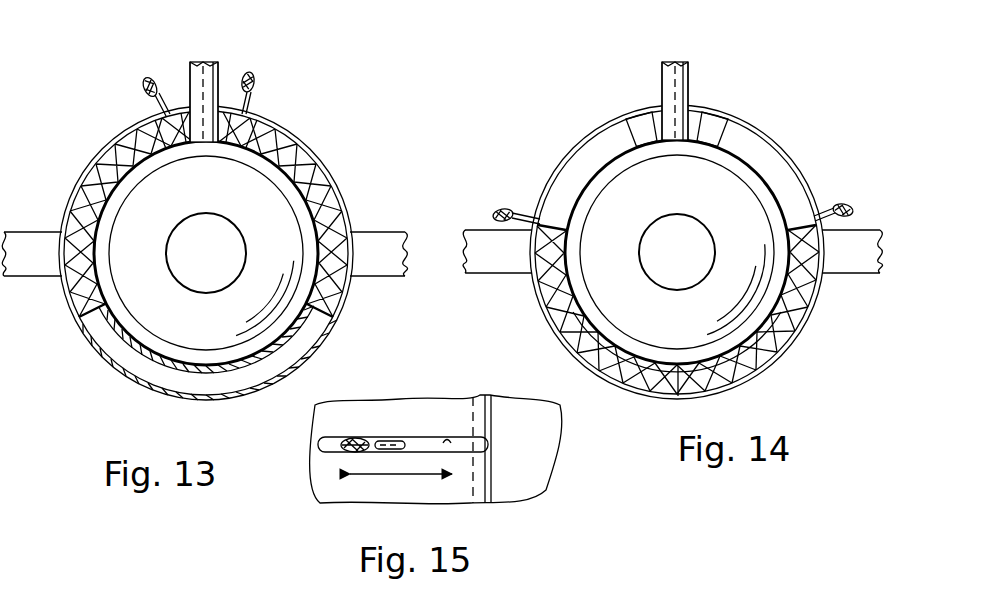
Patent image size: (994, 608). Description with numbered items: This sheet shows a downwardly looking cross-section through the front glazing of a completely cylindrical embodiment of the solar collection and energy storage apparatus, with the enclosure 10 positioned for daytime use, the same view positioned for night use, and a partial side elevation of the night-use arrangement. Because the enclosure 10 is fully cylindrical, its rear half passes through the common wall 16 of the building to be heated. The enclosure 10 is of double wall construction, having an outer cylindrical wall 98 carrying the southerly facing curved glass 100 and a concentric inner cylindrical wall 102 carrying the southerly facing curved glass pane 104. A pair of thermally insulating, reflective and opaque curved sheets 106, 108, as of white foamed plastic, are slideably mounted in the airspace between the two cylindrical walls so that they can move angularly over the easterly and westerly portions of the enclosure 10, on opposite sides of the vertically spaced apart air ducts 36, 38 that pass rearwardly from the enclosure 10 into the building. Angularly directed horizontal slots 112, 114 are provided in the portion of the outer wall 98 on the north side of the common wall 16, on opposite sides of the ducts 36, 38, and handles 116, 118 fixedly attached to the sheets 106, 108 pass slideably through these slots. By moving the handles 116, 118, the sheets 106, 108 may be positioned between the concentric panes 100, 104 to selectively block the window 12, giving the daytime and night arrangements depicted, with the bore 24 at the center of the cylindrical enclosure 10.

In FIG. 13, the enclosure 10 is at (318, 115).
In FIG. 14, the enclosure 10 is at (777, 97).
In FIG. 13, the window 12 is at (83, 352).
In FIG. 14, the window 12 is at (797, 351).
In FIG. 13, the common wall 16 is at (391, 266).
In FIG. 14, the common wall 16 is at (512, 253).
In FIG. 15, the common wall 16 is at (527, 449).
In FIG. 13, the bore 24 is at (108, 217).
In FIG. 14, the bore 24 is at (615, 175).
In FIG. 13, the air duct 36 is at (244, 71).
In FIG. 14, the air duct 36 is at (722, 88).
In FIG. 13, the air duct 38 is at (208, 82).
In FIG. 14, the air duct 38 is at (680, 97).
In FIG. 13, the outer cylindrical wall 98 is at (325, 182).
In FIG. 14, the outer cylindrical wall 98 is at (798, 165).
In FIG. 15, the outer cylindrical wall 98 is at (425, 490).
In FIG. 13, the southerly facing curved glass 100 is at (135, 380).
In FIG. 14, the southerly facing curved glass 100 is at (758, 375).
In FIG. 13, the inner cylindrical wall 102 is at (325, 205).
In FIG. 14, the inner cylindrical wall 102 is at (723, 142).
In FIG. 13, the curved glass pane 104 is at (186, 372).
In FIG. 14, the curved glass pane 104 is at (642, 378).
In FIG. 13, the curved sheet 106 is at (303, 160).
In FIG. 14, the curved sheet 106 is at (815, 315).
In FIG. 15, the curved sheet 106 is at (420, 445).
In FIG. 13, the curved sheet 108 is at (83, 170).
In FIG. 14, the curved sheet 108 is at (578, 338).
In FIG. 13, the horizontal slot 112 is at (281, 130).
In FIG. 14, the horizontal slot 112 is at (778, 148).
In FIG. 15, the horizontal slot 112 is at (452, 440).
In FIG. 13, the horizontal slot 114 is at (120, 140).
In FIG. 14, the horizontal slot 114 is at (558, 162).
In FIG. 13, the handle 116 is at (250, 100).
In FIG. 14, the handle 116 is at (820, 210).
In FIG. 15, the handle 116 is at (362, 438).
In FIG. 13, the handle 118 is at (161, 100).
In FIG. 14, the handle 118 is at (522, 214).